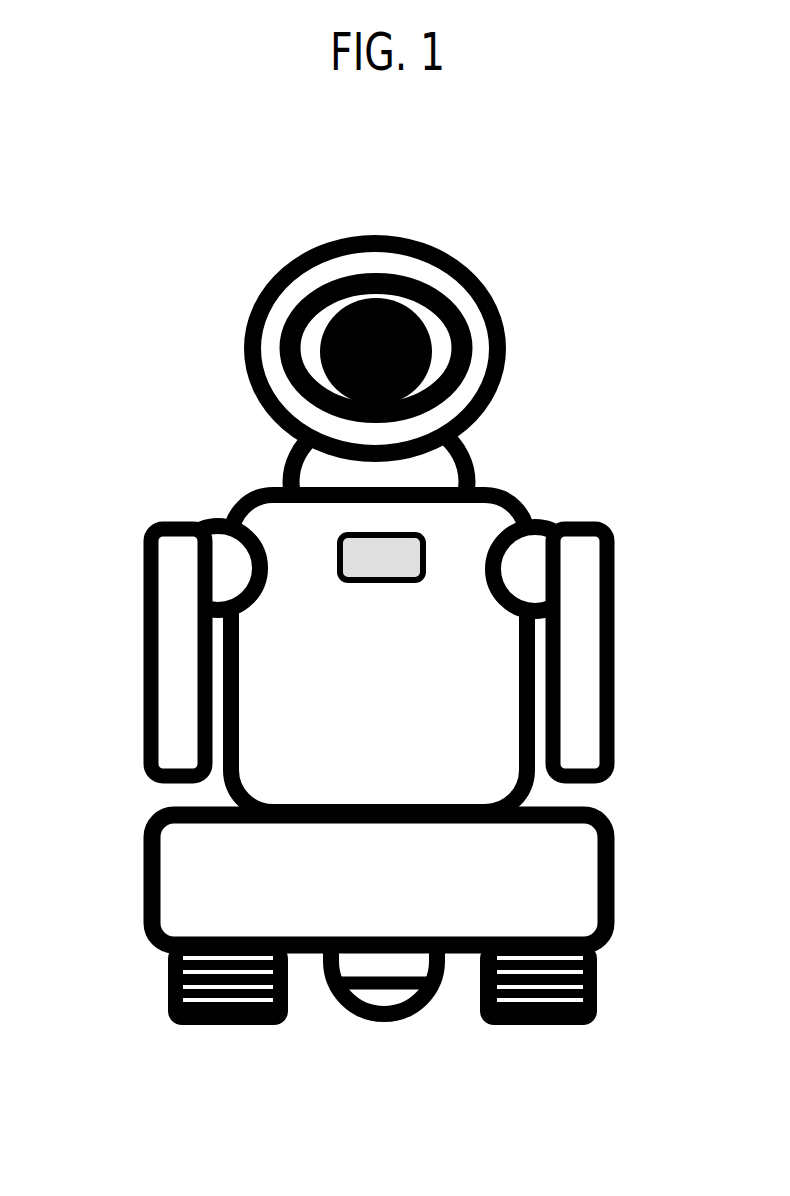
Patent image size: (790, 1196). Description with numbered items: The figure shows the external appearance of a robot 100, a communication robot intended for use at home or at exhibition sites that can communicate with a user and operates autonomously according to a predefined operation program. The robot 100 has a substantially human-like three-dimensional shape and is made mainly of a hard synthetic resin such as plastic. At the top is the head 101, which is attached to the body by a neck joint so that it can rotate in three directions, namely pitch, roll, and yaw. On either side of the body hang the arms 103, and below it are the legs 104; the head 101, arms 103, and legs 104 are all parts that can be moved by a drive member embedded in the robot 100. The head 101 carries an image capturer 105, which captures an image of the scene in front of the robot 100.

The robot 100 is at (370, 599).
The head 101 is at (373, 349).
The arms 103 is at (143, 755).
The legs 104 is at (615, 878).
The image capturer 105 is at (282, 350).